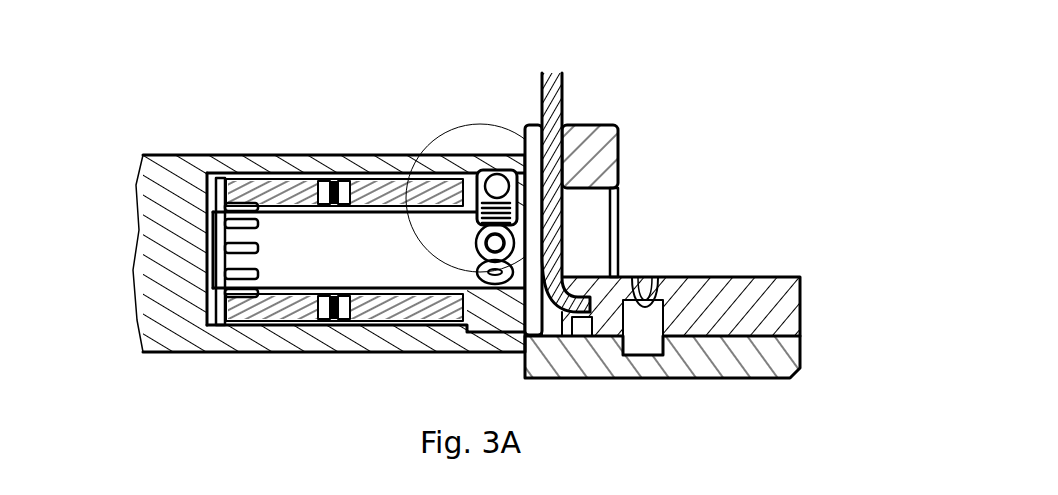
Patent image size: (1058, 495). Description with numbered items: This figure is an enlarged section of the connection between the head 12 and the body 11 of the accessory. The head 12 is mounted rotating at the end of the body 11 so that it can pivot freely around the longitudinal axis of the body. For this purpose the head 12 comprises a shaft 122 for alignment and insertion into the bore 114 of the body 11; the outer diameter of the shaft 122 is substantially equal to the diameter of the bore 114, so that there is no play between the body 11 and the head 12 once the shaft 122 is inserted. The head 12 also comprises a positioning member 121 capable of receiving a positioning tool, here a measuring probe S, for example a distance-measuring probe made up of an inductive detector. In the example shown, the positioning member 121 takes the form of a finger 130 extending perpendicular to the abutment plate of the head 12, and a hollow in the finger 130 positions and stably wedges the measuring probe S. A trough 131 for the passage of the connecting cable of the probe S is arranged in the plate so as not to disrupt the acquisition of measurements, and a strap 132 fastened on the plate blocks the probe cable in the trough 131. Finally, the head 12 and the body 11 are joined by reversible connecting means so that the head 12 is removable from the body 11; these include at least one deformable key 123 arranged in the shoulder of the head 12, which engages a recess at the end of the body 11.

The body 11 is at (185, 162).
The bore 114 is at (193, 252).
The shaft 122 is at (282, 320).
The deformable key 123 is at (492, 180).
The strap 132 is at (585, 133).
The measuring probe S is at (705, 272).
The head 12 is at (775, 242).
The positioning member 121 is at (735, 357).
The finger 130 is at (786, 354).
The trough 131 is at (553, 323).